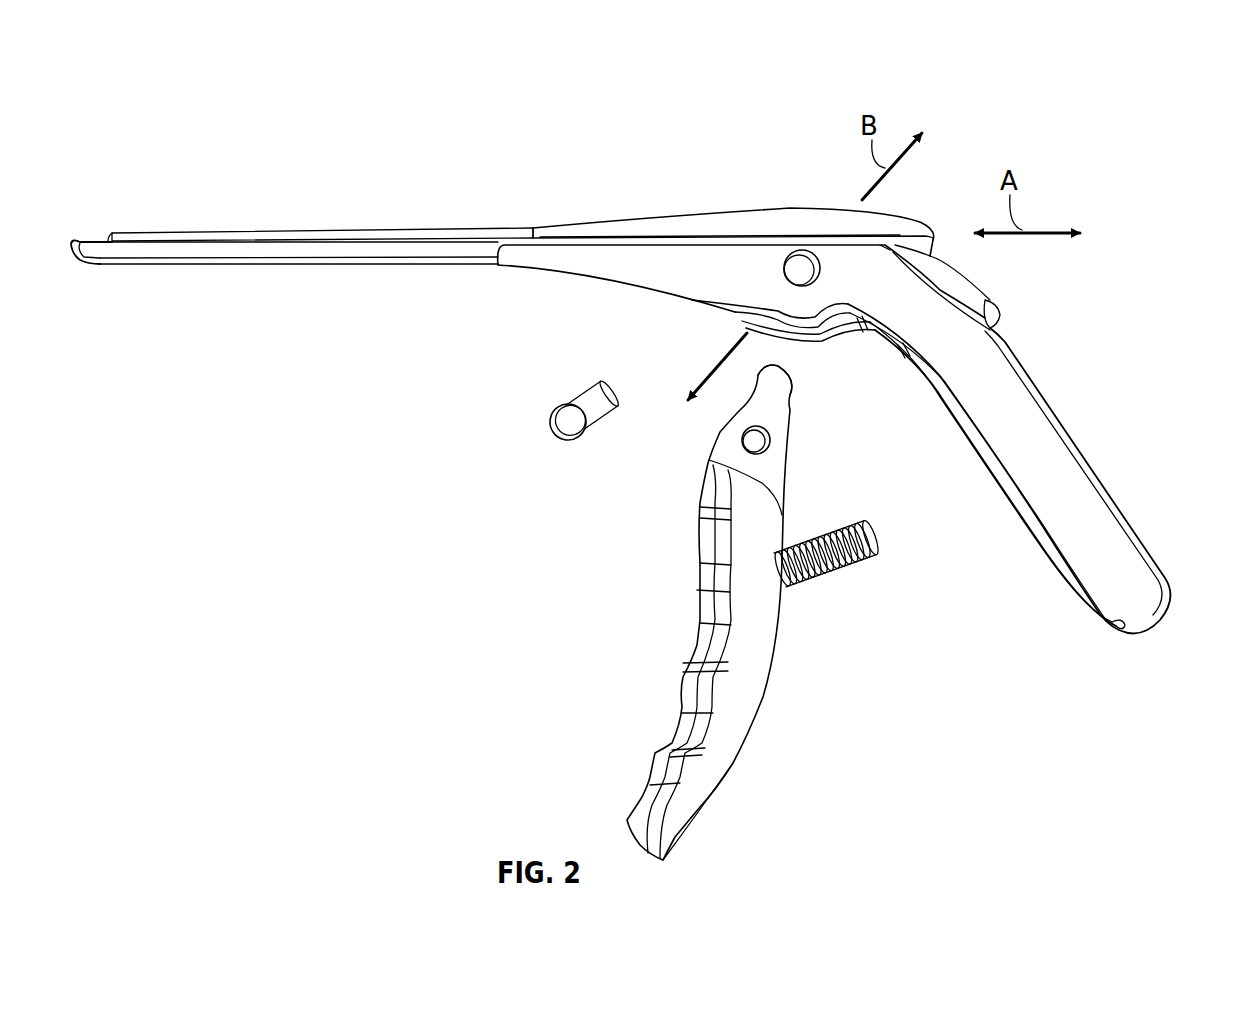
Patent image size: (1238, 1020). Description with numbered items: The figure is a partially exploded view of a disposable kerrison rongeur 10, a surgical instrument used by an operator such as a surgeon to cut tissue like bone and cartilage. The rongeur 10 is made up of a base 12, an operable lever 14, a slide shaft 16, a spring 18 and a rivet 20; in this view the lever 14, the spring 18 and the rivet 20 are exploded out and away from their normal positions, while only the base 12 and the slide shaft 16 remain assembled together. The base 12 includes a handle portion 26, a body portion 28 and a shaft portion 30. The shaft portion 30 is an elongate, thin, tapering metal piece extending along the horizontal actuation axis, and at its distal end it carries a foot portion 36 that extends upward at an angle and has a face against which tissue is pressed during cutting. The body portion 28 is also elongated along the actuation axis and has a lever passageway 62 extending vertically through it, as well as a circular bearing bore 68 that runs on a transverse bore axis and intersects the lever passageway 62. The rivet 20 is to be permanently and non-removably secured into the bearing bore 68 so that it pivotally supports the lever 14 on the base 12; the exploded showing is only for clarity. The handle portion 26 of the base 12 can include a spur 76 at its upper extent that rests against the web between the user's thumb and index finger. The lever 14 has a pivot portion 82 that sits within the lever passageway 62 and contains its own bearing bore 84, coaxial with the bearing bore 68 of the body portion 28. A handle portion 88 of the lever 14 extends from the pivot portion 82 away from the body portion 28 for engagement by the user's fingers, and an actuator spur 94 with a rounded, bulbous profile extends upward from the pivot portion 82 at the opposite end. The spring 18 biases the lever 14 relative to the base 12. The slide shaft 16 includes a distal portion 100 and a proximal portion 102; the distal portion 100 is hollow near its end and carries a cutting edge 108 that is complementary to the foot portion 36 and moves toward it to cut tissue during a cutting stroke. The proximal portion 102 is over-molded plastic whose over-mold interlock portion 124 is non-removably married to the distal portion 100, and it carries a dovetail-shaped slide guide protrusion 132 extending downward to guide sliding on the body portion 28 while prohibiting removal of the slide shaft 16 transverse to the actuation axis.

The disposable kerrison rongeur 10 is at (165, 105).
The base 12 is at (1110, 352).
The operable lever 14 is at (692, 642).
The slide shaft 16 is at (732, 200).
The spring 18 is at (848, 570).
The rivet 20 is at (568, 427).
The handle portion 26 is at (1130, 535).
The body portion 28 is at (653, 270).
The shaft portion 30 is at (195, 265).
The foot portion 36 is at (74, 240).
The lever passageway 62 is at (745, 318).
The bearing bore 68 is at (796, 264).
The spur 76 is at (1000, 303).
The pivot portion 82 is at (770, 475).
The bearing bore 84 is at (756, 440).
The handle portion 88 is at (688, 810).
The actuator spur 94 is at (785, 382).
The distal portion 100 is at (195, 230).
The proximal portion 102 is at (578, 222).
The cutting edge 108 is at (108, 238).
The over-mold interlock portion 124 is at (675, 222).
The slide guide protrusion 132 is at (940, 262).